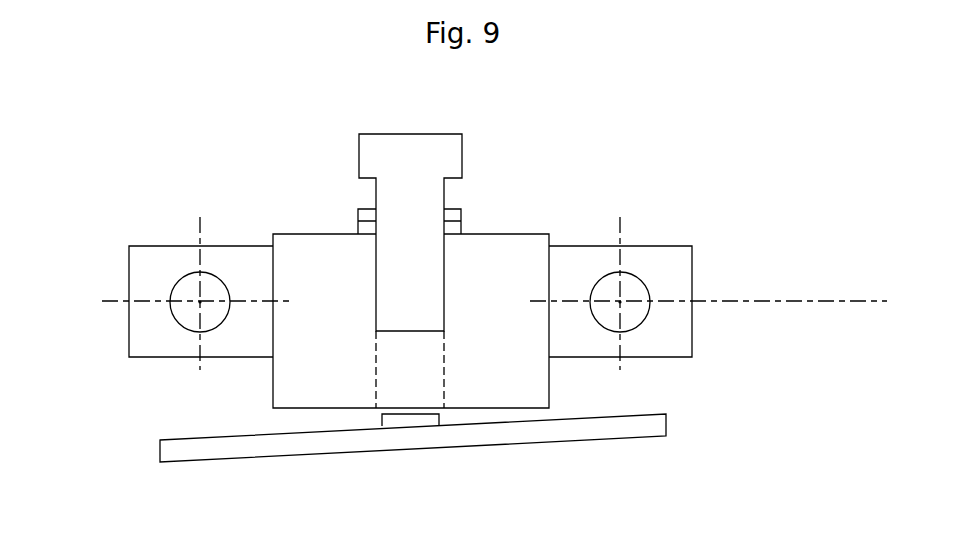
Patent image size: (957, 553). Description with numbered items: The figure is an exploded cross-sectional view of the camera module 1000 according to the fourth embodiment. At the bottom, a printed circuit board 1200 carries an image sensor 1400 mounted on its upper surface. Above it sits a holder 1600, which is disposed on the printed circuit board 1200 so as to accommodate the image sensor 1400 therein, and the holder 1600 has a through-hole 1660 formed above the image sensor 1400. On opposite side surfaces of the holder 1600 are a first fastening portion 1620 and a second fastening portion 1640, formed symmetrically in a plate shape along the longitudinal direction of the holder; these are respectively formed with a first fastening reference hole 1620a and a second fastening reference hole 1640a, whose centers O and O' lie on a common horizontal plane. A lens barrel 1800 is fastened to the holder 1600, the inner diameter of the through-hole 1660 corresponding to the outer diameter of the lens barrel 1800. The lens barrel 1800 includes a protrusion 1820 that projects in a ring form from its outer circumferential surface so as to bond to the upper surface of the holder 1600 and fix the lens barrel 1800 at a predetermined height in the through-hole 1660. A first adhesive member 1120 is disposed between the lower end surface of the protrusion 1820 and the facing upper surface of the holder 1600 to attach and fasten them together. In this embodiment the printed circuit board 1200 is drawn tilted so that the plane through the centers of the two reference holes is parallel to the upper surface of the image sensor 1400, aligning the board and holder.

The camera module 1000 is at (747, 120).
The lens barrel 1800 is at (454, 153).
The protrusion 1820 is at (452, 217).
The first adhesive member 1120 is at (368, 228).
The holder 1600 is at (285, 393).
The through-hole 1660 is at (384, 368).
The first fastening portion 1620 is at (145, 265).
The first fastening reference hole 1620a is at (188, 312).
The second fastening portion 1640 is at (675, 265).
The second fastening reference hole 1640a is at (632, 312).
The image sensor 1400 is at (413, 420).
The printed circuit board 1200 is at (642, 425).